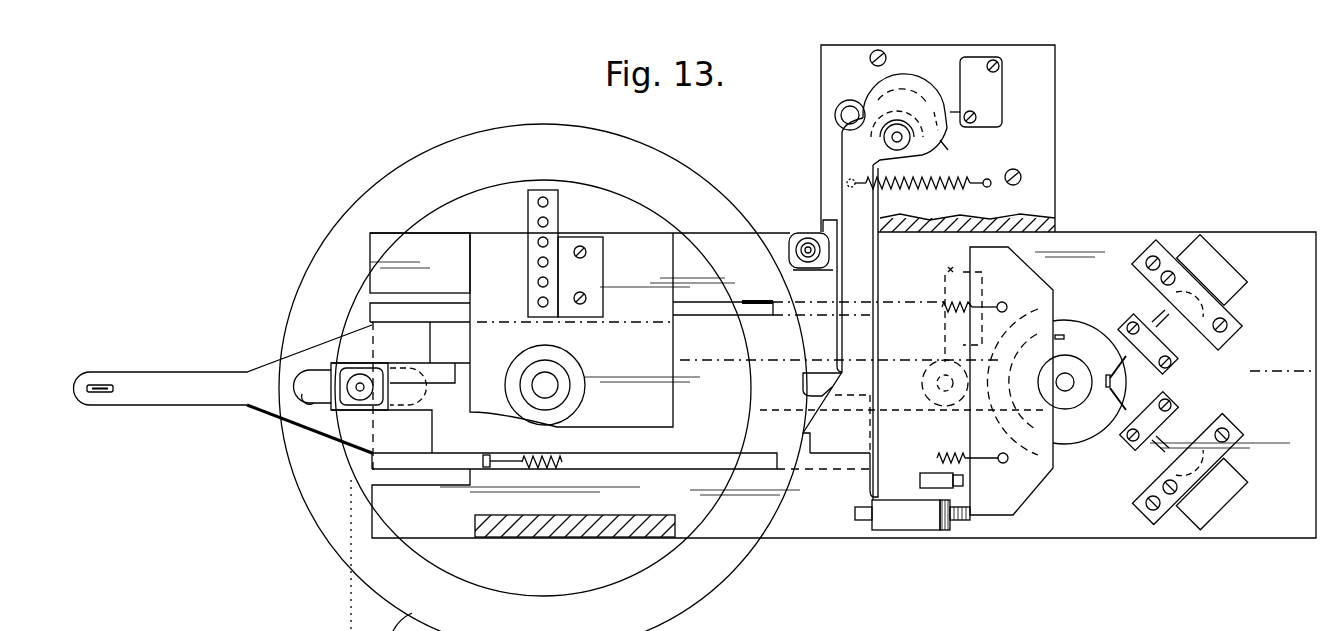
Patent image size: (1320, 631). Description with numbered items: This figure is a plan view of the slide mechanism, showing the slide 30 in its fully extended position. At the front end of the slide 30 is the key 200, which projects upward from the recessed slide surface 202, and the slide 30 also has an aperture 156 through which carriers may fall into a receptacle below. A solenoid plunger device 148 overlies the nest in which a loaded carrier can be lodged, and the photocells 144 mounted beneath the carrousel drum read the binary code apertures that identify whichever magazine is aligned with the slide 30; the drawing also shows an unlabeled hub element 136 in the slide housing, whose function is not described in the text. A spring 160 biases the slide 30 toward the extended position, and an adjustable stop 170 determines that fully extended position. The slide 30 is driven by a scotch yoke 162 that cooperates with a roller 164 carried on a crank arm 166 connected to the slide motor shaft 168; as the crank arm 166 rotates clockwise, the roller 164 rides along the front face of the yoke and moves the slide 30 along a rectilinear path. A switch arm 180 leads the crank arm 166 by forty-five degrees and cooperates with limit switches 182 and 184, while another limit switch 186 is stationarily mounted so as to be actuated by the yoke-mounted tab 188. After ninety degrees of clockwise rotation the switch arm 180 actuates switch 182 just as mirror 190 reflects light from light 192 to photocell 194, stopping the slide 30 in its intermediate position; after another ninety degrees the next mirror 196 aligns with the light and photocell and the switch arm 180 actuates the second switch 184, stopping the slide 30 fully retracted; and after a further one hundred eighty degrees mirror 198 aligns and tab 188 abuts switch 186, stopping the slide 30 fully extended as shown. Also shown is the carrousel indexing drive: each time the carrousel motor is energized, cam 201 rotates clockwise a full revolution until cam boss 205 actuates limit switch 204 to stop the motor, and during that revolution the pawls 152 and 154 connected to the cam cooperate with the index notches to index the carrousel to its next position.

The slide 30 is at (192, 372).
The hub 136 is at (560, 373).
The photocells 144 is at (538, 283).
The solenoid plunger device 148 is at (385, 400).
The pawl 152 is at (811, 236).
The pawl 154 is at (862, 280).
The aperture 156 is at (305, 400).
The spring 160 is at (565, 466).
The scotch yoke 162 is at (1007, 502).
The roller 164 is at (930, 393).
The crank arm 166 is at (977, 444).
The slide motor shaft 168 is at (1070, 372).
The adjustable stop 170 is at (923, 522).
The switch arm 180 is at (948, 270).
The limit switch 182 is at (1247, 280).
The limit switch 184 is at (1247, 484).
The limit switch 186 is at (928, 500).
The tab 188 is at (963, 484).
The mirror 190 is at (1061, 335).
The light 192 is at (1166, 421).
The photocell 194 is at (1166, 334).
The mirror 196 is at (993, 306).
The mirror 198 is at (1118, 383).
The key 200 is at (102, 383).
The cam 201 is at (900, 98).
The recessed slide surface 202 is at (1056, 621).
The limit switch 204 is at (996, 103).
The cam boss 205 is at (963, 149).